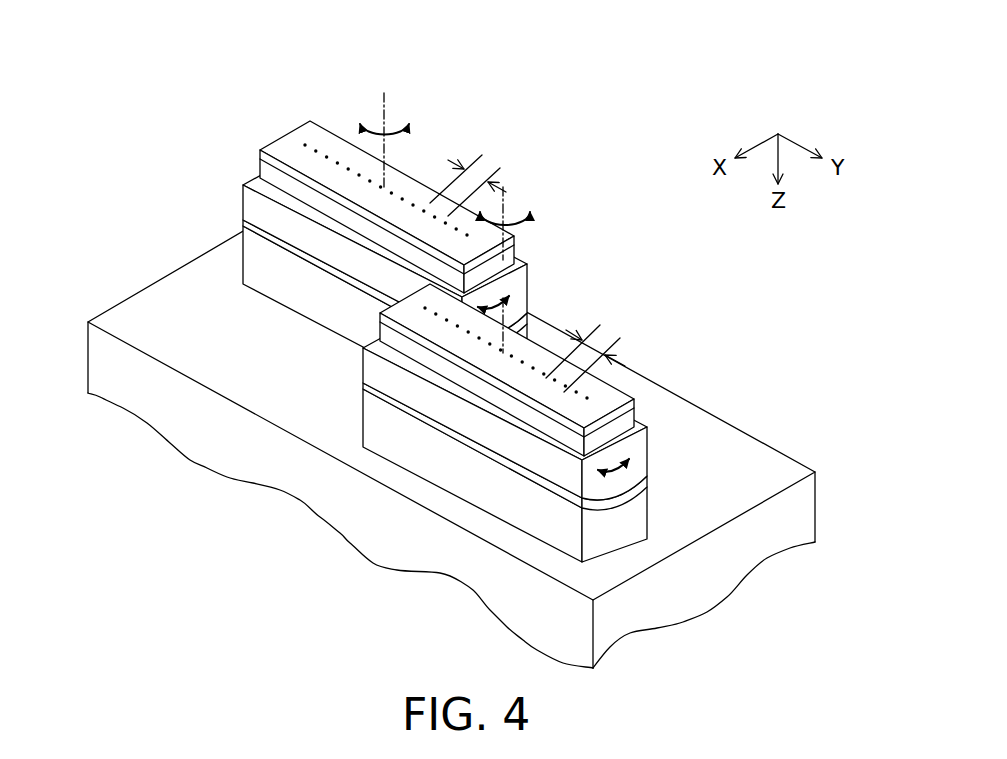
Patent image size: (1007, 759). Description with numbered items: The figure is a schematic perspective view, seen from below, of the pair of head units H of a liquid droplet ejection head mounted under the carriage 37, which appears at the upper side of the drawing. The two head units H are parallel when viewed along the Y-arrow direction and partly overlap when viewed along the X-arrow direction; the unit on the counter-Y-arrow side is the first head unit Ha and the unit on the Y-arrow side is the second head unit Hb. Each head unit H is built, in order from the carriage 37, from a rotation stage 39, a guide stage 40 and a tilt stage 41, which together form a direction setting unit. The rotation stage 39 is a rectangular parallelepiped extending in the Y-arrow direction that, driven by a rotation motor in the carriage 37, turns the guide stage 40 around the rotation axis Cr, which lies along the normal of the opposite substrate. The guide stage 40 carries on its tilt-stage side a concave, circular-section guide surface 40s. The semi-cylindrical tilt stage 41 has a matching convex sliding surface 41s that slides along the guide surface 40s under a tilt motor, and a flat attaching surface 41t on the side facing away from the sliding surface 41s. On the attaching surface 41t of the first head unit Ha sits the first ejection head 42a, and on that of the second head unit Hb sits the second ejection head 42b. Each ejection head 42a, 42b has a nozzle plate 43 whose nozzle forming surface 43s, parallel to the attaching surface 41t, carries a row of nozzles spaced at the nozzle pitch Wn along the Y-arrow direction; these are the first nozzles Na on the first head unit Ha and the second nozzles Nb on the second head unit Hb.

The carriage 37 is at (153, 290).
The rotation stage 39 is at (289, 307).
The guide stage 40 is at (445, 381).
The guide surface 40s is at (294, 247).
The tilt stage 41 is at (442, 325).
The sliding surface 41s is at (244, 227).
The attaching surface 41t is at (251, 180).
The first ejection head 42a is at (388, 82).
The second ejection head 42b is at (697, 352).
The nozzle plate 43 is at (419, 270).
The nozzle forming surface 43s is at (281, 147).
The first nozzle Na is at (326, 156).
The second nozzle Nb is at (446, 318).
The rotation axis Cr is at (386, 110).
The nozzle pitch Wn is at (527, 265).
The head unit H is at (588, 187).
The first head unit Ha is at (549, 104).
The second head unit Hb is at (706, 262).